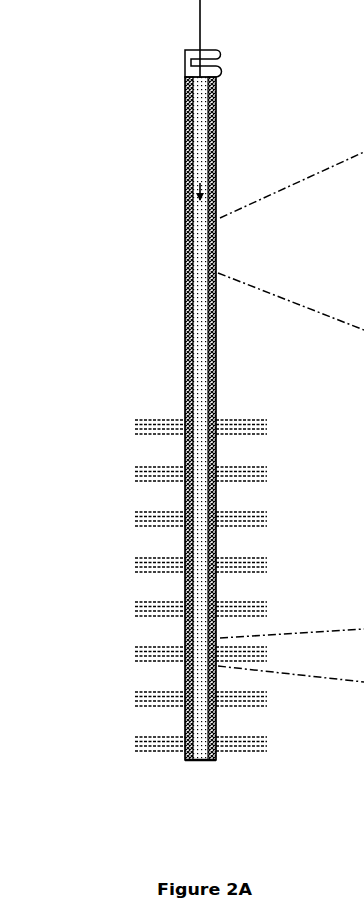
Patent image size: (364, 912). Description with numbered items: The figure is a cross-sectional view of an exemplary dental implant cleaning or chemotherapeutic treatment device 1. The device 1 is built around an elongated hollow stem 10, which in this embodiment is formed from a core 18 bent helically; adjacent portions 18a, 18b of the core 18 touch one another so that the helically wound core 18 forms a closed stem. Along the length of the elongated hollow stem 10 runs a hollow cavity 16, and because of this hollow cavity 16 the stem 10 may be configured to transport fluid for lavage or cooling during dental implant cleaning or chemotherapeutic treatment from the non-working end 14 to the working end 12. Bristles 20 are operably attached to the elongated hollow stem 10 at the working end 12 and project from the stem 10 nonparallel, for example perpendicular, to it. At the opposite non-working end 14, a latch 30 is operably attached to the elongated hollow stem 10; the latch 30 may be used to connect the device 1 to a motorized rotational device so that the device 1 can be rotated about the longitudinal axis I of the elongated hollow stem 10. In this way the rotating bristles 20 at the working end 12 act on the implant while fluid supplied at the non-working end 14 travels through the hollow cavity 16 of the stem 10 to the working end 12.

The dental implant cleaning or chemotherapeutic treatment device 1 is at (66, 114).
The longitudinal axis I is at (203, 21).
The latch 30 is at (221, 52).
The non-working end 14 is at (217, 97).
The hollow cavity 16 is at (216, 172).
The core 18 is at (218, 300).
The adjacent portion of the core 18a is at (188, 331).
The adjacent portion of the core 18b is at (188, 338).
The elongated hollow stem 10 is at (218, 373).
The bristles 20 is at (117, 413).
The working end 12 is at (217, 718).